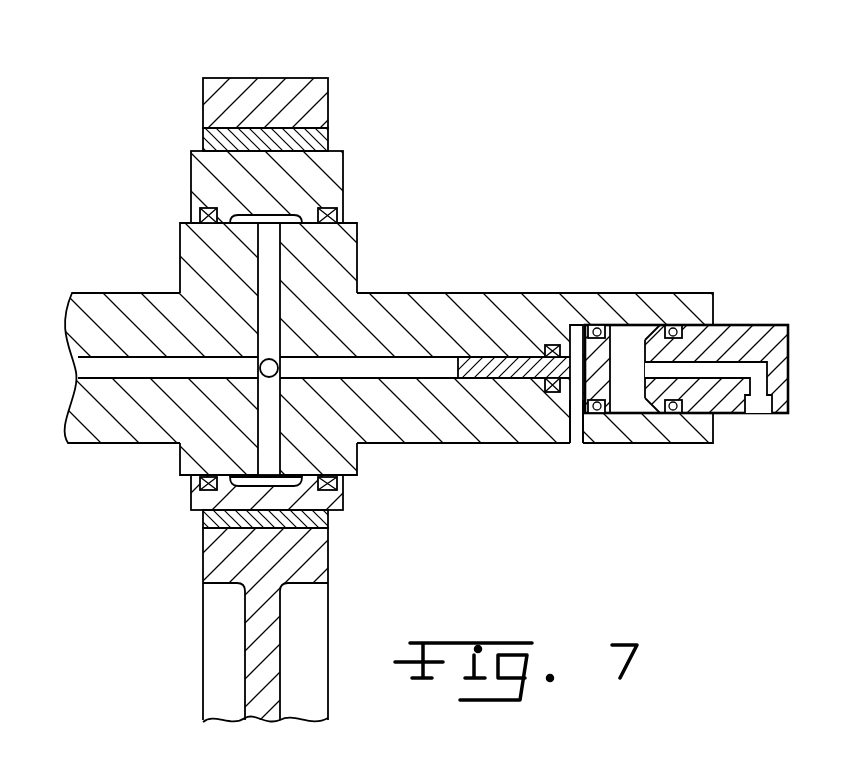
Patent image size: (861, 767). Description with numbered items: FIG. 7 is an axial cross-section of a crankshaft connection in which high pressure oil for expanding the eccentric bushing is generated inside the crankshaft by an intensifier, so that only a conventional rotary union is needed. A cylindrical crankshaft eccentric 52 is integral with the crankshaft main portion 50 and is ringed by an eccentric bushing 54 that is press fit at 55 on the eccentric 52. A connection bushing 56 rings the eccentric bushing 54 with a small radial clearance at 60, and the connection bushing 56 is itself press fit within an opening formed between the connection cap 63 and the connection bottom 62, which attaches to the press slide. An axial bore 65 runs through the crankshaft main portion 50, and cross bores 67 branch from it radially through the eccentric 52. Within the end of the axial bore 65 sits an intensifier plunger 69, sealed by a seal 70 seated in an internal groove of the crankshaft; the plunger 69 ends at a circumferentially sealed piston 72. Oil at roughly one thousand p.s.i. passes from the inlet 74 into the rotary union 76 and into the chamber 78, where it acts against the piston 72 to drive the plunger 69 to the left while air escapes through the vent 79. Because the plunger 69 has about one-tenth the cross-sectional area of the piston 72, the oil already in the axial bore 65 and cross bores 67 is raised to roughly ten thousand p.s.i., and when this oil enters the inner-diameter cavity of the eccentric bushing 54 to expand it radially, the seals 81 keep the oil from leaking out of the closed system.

The crankshaft main portion 50 is at (105, 307).
The crankshaft eccentric 52 is at (180, 250).
The eccentric bushing 54 is at (340, 162).
The press fit 55 is at (188, 218).
The connection bushing 56 is at (200, 519).
The radial clearance 60 is at (203, 148).
The connection bottom 62 is at (200, 637).
The connection cap 63 is at (203, 78).
The axial bore 65 is at (418, 365).
The cross bores 67 is at (272, 267).
The intensifier plunger 69 is at (517, 382).
The seal 70 is at (545, 340).
The piston 72 is at (575, 325).
The oil inlet 74 is at (760, 414).
The rotary union 76 is at (757, 323).
The chamber 78 is at (625, 350).
The vent 79 is at (576, 446).
The seals 81 is at (327, 209).